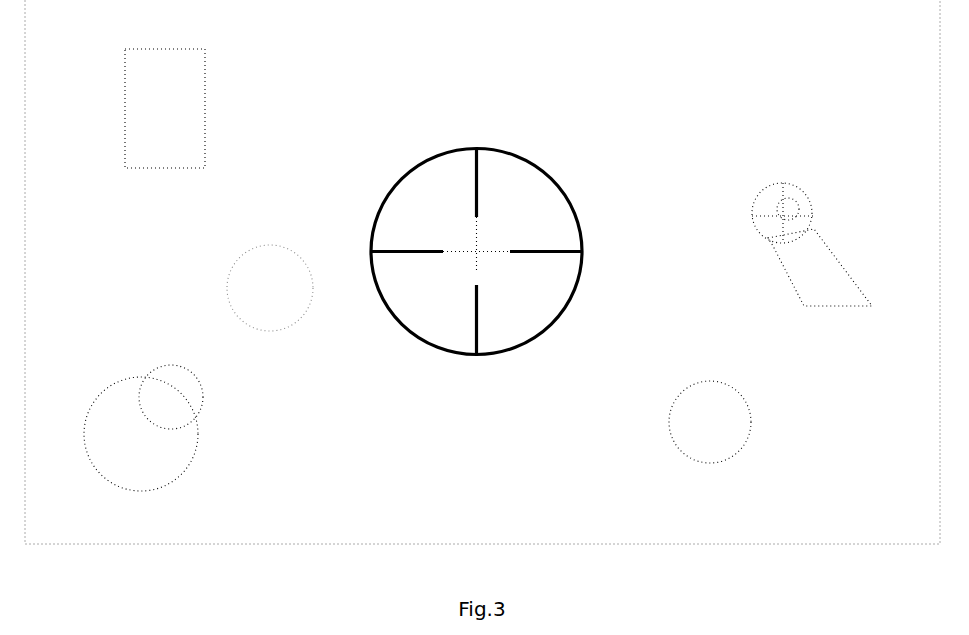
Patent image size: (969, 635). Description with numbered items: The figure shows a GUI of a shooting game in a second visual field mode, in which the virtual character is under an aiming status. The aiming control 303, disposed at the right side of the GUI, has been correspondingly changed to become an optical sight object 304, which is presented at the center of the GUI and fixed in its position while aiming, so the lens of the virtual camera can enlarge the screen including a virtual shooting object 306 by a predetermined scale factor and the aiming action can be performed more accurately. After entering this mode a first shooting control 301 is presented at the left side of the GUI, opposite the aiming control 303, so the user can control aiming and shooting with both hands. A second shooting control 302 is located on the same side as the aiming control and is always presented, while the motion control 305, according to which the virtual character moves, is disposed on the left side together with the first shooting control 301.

The first shooting control 301 is at (238, 280).
The second shooting control 302 is at (738, 411).
The aiming control 303 is at (812, 236).
The optical sight object 304 is at (480, 232).
The motion control 305 is at (176, 428).
The virtual shooting object 306 is at (193, 133).